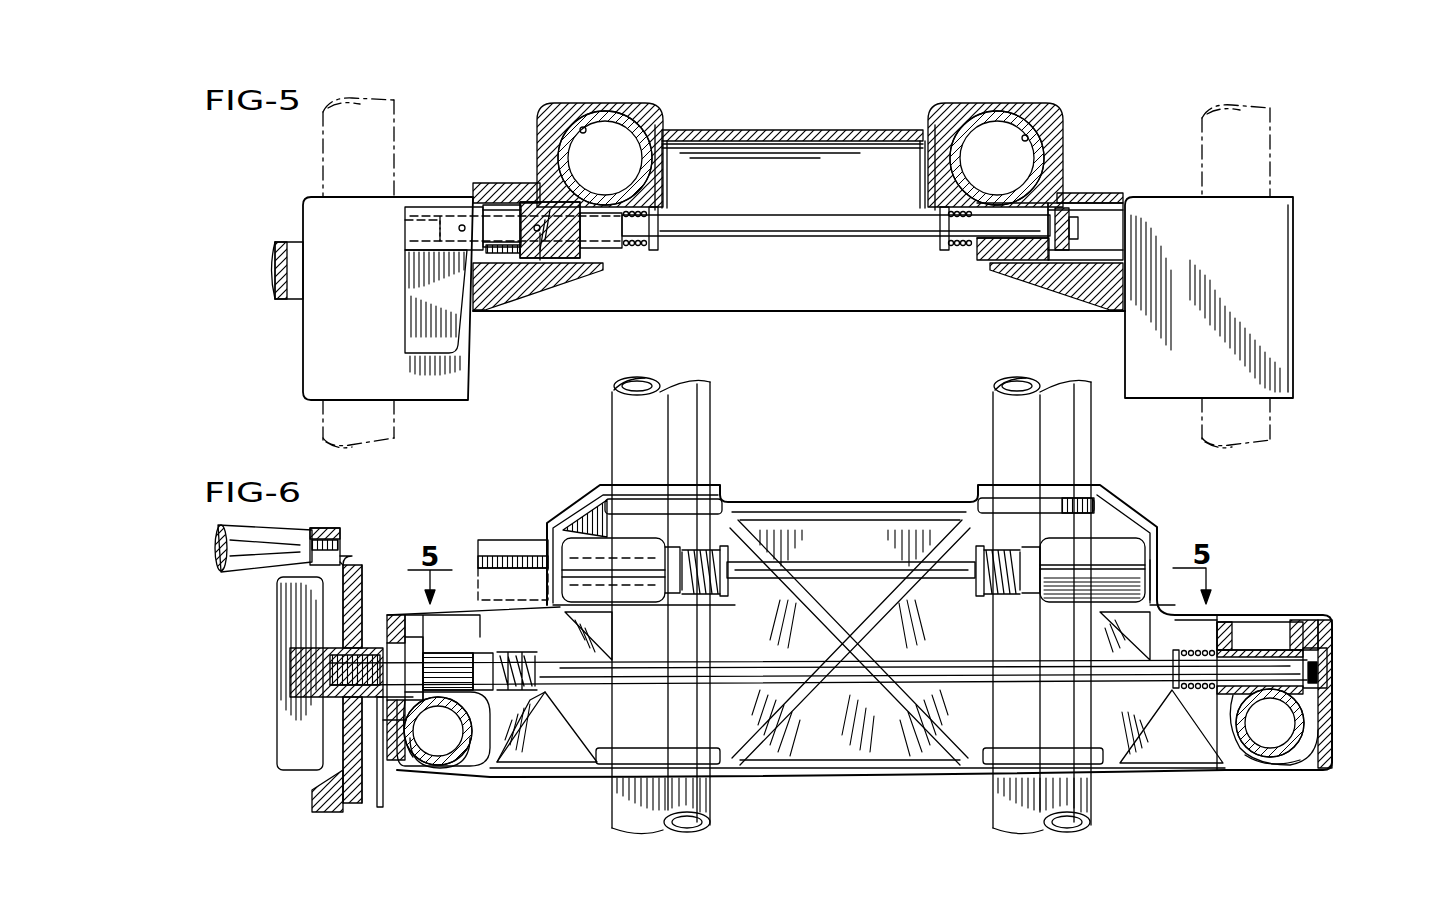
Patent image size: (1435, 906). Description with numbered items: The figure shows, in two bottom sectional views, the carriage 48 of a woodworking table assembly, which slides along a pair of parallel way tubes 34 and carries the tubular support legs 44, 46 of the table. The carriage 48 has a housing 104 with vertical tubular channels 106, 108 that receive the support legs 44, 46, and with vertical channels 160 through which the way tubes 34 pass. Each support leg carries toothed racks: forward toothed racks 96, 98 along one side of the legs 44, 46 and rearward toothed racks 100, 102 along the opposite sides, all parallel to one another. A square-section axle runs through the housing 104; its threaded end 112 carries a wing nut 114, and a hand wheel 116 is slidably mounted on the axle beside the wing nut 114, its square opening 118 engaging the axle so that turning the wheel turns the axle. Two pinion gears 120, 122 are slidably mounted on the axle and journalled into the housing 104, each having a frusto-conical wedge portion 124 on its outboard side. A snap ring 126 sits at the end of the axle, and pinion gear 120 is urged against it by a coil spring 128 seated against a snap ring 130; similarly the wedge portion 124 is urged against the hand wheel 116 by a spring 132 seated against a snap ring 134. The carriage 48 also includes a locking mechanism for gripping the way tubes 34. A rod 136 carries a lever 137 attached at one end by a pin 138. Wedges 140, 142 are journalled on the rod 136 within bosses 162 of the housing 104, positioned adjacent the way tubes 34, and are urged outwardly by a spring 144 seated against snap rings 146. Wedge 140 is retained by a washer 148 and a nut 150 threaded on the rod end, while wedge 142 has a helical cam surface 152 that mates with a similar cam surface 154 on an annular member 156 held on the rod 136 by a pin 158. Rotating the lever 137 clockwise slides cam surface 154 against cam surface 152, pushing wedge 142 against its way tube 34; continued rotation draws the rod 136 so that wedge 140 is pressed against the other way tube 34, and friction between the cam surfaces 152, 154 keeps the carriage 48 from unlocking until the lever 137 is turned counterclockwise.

In FIG. 5, the way tubes 34 is at (597, 112).
In FIG. 6, the way tubes 34 is at (640, 446).
In FIG. 6, the support leg 44 is at (1318, 733).
In FIG. 6, the support leg 46 is at (405, 740).
In FIG. 5, the carriage 48 is at (770, 128).
In FIG. 6, the carriage 48 is at (822, 548).
In FIG. 6, the forward toothed rack 96 is at (1314, 672).
In FIG. 6, the forward toothed rack 98 is at (438, 731).
In FIG. 6, the rearward toothed rack 100 is at (1270, 757).
In FIG. 6, the rearward toothed rack 102 is at (437, 770).
In FIG. 5, the housing 104 is at (1205, 306).
In FIG. 6, the housing 104 is at (1178, 608).
In FIG. 6, the tubular channel 106 is at (1305, 762).
In FIG. 6, the tubular channel 108 is at (470, 755).
In FIG. 6, the threaded end 112 is at (292, 662).
In FIG. 6, the wing nut 114 is at (278, 600).
In FIG. 6, the hand wheel 116 is at (358, 565).
In FIG. 6, the square opening 118 is at (378, 760).
In FIG. 6, the pinion gear 120 is at (1260, 650).
In FIG. 6, the pinion gear 122 is at (457, 650).
In FIG. 6, the frusto-conical wedge portion 124 is at (412, 628).
In FIG. 6, the snap ring 126 is at (1330, 650).
In FIG. 6, the coil spring 128 is at (1182, 692).
In FIG. 6, the snap ring 130 is at (1180, 652).
In FIG. 6, the spring 132 is at (518, 655).
In FIG. 6, the snap ring 134 is at (527, 702).
In FIG. 5, the rod 136 is at (760, 228).
In FIG. 6, the rod 136 is at (828, 568).
In FIG. 5, the lever 137 is at (415, 283).
In FIG. 6, the lever 137 is at (500, 540).
In FIG. 5, the pin 138 is at (462, 225).
In FIG. 5, the wedge 140 is at (1012, 265).
In FIG. 6, the wedge 140 is at (1035, 585).
In FIG. 5, the wedge 142 is at (605, 268).
In FIG. 6, the wedge 142 is at (665, 602).
In FIG. 5, the spring 144 is at (635, 248).
In FIG. 6, the spring 144 is at (705, 592).
In FIG. 5, the snap rings 146 is at (660, 228).
In FIG. 6, the snap rings 146 is at (732, 565).
In FIG. 5, the washer 148 is at (1072, 205).
In FIG. 5, the nut 150 is at (1082, 215).
In FIG. 5, the helical cam surface 152 is at (543, 240).
In FIG. 5, the cam surface 154 is at (548, 250).
In FIG. 5, the annular member 156 is at (535, 225).
In FIG. 5, the pin 158 is at (528, 205).
In FIG. 5, the vertical channels 160 is at (583, 128).
In FIG. 6, the vertical channels 160 is at (685, 502).
In FIG. 6, the bosses 162 is at (598, 562).